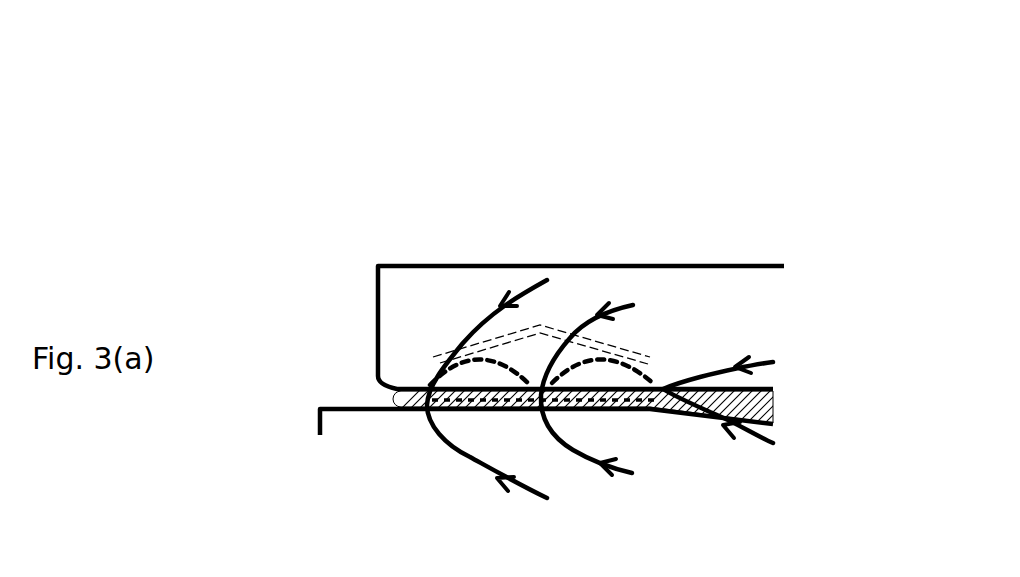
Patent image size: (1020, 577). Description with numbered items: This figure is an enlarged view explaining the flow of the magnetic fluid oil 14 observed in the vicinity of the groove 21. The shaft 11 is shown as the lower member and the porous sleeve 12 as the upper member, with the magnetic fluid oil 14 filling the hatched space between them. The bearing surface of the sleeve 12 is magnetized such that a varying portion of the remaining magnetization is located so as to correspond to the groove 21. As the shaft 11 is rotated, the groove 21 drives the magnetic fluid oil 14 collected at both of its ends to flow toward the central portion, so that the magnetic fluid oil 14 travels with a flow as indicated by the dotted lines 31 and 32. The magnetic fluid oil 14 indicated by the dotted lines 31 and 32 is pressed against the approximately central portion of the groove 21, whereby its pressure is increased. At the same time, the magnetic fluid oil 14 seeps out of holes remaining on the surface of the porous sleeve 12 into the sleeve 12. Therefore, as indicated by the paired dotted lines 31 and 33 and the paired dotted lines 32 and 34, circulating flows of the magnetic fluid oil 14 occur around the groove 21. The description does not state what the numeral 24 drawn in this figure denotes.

The shaft 11 is at (350, 435).
The sleeve 12 is at (750, 282).
The magnetic fluid oil 14 is at (750, 410).
The groove 21 is at (498, 342).
The air flow 24 is at (487, 308).
The dotted line 31 is at (485, 410).
The dotted line 32 is at (635, 388).
The dotted line 33 is at (462, 363).
The dotted line 34 is at (655, 410).